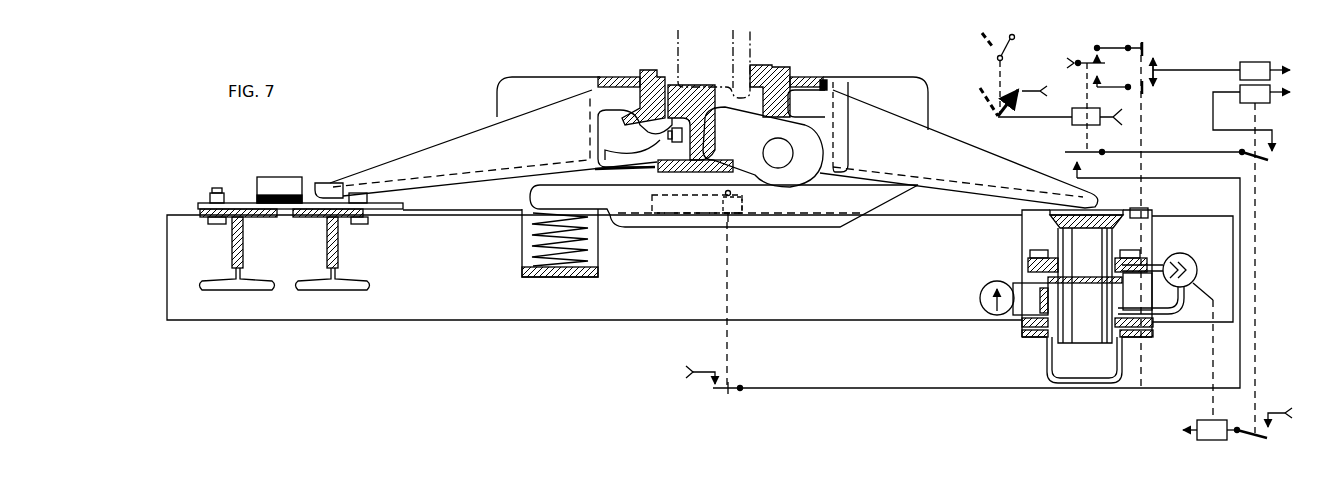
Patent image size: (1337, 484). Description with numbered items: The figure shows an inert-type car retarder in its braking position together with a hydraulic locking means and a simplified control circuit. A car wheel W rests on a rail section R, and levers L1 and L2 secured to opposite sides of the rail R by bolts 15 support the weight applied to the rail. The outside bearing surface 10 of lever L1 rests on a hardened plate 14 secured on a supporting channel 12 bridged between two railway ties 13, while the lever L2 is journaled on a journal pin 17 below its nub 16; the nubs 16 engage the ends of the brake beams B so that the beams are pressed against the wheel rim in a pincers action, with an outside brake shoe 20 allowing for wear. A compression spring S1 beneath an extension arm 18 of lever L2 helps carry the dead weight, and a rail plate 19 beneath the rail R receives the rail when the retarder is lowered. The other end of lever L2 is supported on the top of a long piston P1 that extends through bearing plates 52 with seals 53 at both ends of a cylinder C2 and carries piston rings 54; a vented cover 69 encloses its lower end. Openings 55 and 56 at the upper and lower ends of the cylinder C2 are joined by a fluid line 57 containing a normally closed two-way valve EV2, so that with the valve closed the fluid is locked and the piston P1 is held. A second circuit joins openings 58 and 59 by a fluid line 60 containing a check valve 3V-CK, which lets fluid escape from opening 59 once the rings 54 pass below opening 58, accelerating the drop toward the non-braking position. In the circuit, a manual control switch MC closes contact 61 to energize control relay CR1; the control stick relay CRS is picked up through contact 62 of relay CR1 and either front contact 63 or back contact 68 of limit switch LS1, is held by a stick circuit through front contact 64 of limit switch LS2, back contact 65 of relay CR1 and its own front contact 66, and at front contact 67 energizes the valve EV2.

The hardened bearing surface 10 is at (332, 190).
The supporting channel 12 is at (244, 250).
The railway ties 13 is at (167, 249).
The hardened plate 14 is at (231, 203).
The bolts 15 is at (670, 136).
The nub 16 is at (605, 82).
The journal pin 17 is at (783, 167).
The extension arm 18 is at (530, 200).
The rail plate 19 is at (652, 202).
The outside brake shoe 20 is at (670, 72).
The bearing plates 52 is at (1146, 262).
The seal 53 is at (1057, 260).
The piston rings 54 is at (1030, 280).
The upper opening 55 is at (1118, 262).
The lower opening 56 is at (1117, 306).
The fluid line 57 is at (1178, 310).
The intermediate opening 58 is at (1017, 283).
The lower opening 59 is at (1042, 310).
The fluid line 60 is at (1016, 323).
The contact 61 is at (1008, 102).
The contact 62 is at (1083, 66).
The front contact 63 is at (1145, 92).
The front contact 64 is at (729, 391).
The back contact 65 is at (1065, 152).
The front contact 66 is at (1256, 160).
The front contact 67 is at (1245, 436).
The back contact 68 is at (1143, 54).
The cover 69 is at (1078, 384).
The brake beam B is at (524, 77).
The rail section R is at (662, 74).
The car wheel W is at (751, 46).
The lever L1 is at (403, 158).
The lever L2 is at (977, 151).
The compression spring S1 is at (598, 252).
The limit switch LS1 is at (1149, 210).
The limit switch LS2 is at (731, 216).
The piston P1 is at (1146, 234).
The cylinder C2 is at (1135, 292).
The manual control switch MC is at (1003, 73).
The control relay CR1 is at (1097, 107).
The control stick relay CRS is at (1263, 238).
The electrical hydraulic two-way valve EV2 is at (1190, 421).
The check valve 3V-CK is at (980, 297).